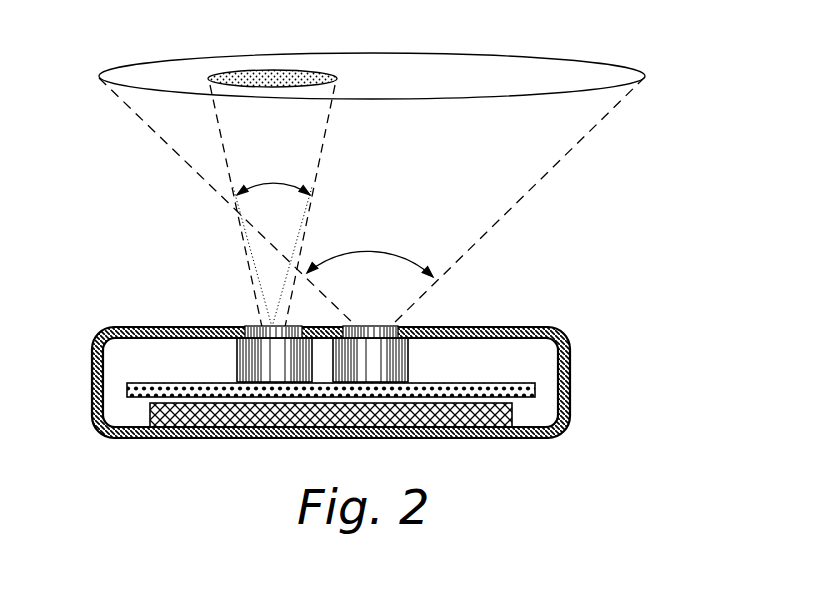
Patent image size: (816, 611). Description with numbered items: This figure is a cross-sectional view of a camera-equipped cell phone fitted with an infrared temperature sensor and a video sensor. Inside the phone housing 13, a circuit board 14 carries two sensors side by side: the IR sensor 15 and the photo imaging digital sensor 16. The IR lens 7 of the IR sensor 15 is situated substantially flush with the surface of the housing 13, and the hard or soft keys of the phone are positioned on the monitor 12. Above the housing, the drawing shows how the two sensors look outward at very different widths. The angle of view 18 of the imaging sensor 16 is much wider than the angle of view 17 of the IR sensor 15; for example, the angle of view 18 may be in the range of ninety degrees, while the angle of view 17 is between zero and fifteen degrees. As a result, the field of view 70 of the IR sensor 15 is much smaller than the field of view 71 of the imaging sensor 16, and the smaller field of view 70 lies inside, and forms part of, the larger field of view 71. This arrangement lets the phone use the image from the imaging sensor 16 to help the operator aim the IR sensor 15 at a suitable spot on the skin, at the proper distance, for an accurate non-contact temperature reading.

The IR lens 7 is at (255, 327).
The monitor 12 is at (227, 417).
The phone housing 13 is at (570, 370).
The circuit board 14 is at (530, 397).
The IR sensor 15 is at (257, 357).
The photo imaging digital sensor 16 is at (395, 367).
The angle of view of the IR sensor 17 is at (262, 183).
The angle of view of the imaging sensor 18 is at (370, 245).
The field of view of the IR sensor 70 is at (274, 80).
The field of view of the imaging sensor 71 is at (593, 80).